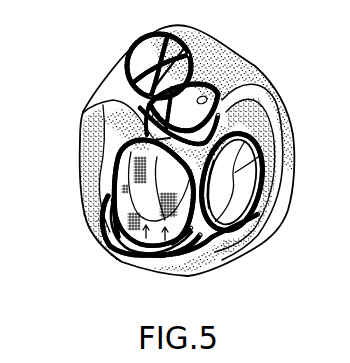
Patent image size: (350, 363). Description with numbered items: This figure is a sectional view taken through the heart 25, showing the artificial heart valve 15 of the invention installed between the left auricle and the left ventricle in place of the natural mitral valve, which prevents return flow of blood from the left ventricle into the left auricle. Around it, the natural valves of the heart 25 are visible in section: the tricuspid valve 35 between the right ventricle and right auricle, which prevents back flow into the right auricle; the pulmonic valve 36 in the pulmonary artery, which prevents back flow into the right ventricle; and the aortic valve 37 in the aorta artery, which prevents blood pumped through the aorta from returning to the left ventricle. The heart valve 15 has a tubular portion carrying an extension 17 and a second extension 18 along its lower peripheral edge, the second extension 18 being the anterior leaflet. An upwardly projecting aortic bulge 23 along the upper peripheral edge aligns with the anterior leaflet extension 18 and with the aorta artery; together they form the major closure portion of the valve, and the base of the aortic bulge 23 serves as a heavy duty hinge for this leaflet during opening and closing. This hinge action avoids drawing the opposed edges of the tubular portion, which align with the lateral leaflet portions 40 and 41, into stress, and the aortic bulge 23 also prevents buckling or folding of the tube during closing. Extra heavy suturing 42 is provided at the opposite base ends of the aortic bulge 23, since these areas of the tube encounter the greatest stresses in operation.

The heart 25 is at (257, 55).
The pulmonic valve 36 is at (162, 44).
The aortic valve 37 is at (276, 97).
The tricuspid valve 35 is at (243, 197).
The aortic bulge 23 is at (184, 151).
The lateral leaflet portion 40 is at (112, 179).
The extra heavy suturing 42 is at (178, 190).
The extension 17 is at (106, 238).
The heart valve 15 is at (131, 246).
The second extension 18 is at (166, 244).
The lateral leaflet portion 41 is at (196, 240).